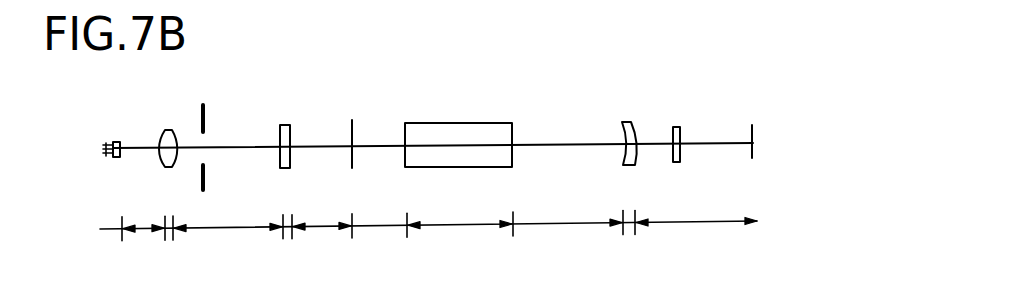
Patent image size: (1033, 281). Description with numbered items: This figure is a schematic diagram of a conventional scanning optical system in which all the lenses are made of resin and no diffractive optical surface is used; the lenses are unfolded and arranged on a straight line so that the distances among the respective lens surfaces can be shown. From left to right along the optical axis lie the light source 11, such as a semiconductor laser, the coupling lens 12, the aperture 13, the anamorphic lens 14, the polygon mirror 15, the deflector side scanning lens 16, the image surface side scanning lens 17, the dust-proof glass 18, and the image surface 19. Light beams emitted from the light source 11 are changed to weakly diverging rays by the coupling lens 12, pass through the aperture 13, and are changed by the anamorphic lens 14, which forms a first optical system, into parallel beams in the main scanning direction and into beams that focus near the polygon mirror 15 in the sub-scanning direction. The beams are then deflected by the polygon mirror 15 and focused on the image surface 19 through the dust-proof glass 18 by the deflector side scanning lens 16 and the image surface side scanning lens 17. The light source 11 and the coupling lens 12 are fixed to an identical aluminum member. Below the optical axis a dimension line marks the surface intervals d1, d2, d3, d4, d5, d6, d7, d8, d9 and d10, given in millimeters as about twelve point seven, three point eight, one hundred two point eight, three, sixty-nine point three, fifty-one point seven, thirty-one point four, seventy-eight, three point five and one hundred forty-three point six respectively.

The light source 11 is at (117, 141).
The coupling lens 12 is at (170, 130).
The aperture 13 is at (206, 104).
The anamorphic lens 14 is at (288, 124).
The polygon mirror 15 is at (352, 120).
The deflector side scanning lens 16 is at (494, 123).
The image surface side scanning lens 17 is at (629, 122).
The dust-proof glass 18 is at (677, 126).
The image surface 19 is at (752, 124).
The surface interval d1 is at (142, 232).
The surface interval d2 is at (168, 232).
The surface interval d3 is at (228, 231).
The surface interval d4 is at (287, 232).
The surface interval d5 is at (322, 229).
The surface interval d6 is at (376, 229).
The surface interval d7 is at (458, 228).
The surface interval d8 is at (562, 226).
The surface interval d9 is at (630, 226).
The surface interval d10 is at (693, 225).